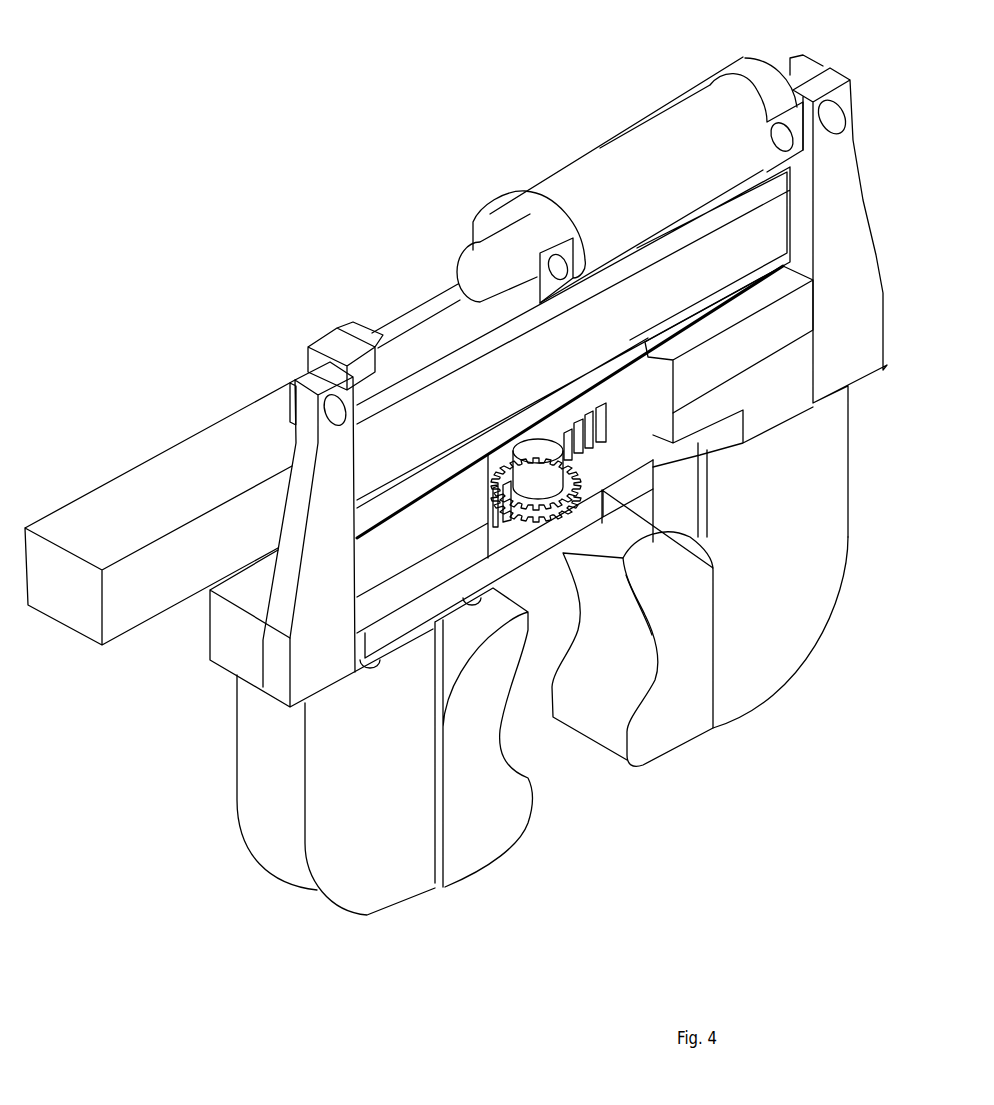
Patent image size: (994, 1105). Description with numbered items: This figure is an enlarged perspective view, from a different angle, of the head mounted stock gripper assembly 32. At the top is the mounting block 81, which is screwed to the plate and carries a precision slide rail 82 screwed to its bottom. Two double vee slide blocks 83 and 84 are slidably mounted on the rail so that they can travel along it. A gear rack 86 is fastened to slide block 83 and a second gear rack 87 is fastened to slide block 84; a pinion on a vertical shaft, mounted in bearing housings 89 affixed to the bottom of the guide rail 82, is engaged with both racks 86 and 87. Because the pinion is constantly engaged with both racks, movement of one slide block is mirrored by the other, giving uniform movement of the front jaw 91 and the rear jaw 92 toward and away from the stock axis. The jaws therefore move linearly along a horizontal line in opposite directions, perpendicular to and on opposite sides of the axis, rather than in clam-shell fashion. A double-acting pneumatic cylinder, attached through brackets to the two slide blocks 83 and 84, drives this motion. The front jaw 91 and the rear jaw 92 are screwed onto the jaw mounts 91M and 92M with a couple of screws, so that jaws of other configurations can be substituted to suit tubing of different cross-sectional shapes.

The head mounted stock gripper assembly 32 is at (218, 950).
The mounting block 81 is at (172, 473).
The precision slide rail 82 is at (470, 455).
The double vee slide block 83 is at (760, 345).
The double vee slide block 84 is at (430, 522).
The gear rack 86 is at (592, 400).
The gear rack 87 is at (408, 613).
The bearing housings 89 is at (543, 442).
The front jaw 91 is at (688, 712).
The jaw mount 91M is at (785, 632).
The rear jaw 92 is at (494, 826).
The jaw mount 92M is at (394, 853).